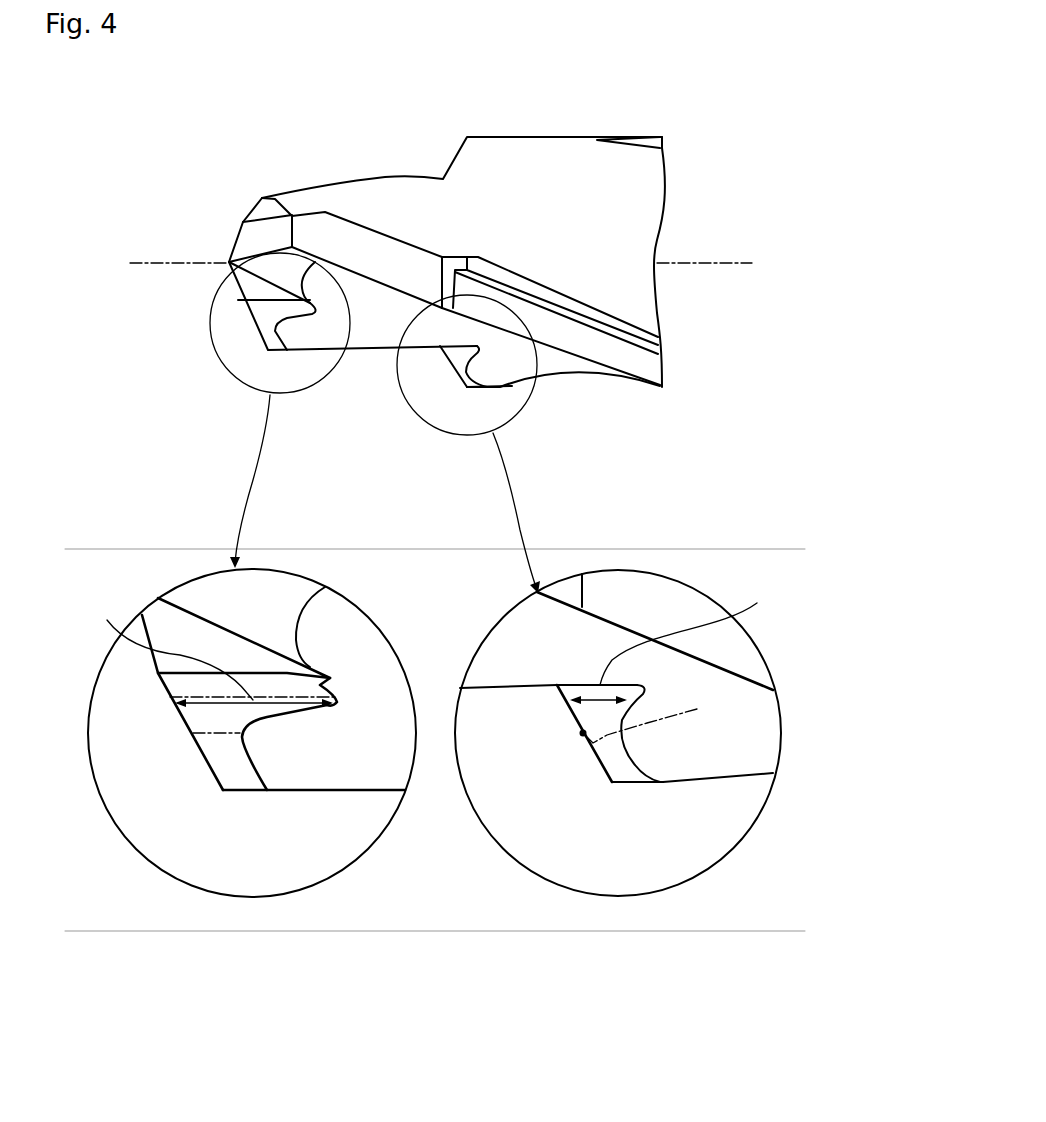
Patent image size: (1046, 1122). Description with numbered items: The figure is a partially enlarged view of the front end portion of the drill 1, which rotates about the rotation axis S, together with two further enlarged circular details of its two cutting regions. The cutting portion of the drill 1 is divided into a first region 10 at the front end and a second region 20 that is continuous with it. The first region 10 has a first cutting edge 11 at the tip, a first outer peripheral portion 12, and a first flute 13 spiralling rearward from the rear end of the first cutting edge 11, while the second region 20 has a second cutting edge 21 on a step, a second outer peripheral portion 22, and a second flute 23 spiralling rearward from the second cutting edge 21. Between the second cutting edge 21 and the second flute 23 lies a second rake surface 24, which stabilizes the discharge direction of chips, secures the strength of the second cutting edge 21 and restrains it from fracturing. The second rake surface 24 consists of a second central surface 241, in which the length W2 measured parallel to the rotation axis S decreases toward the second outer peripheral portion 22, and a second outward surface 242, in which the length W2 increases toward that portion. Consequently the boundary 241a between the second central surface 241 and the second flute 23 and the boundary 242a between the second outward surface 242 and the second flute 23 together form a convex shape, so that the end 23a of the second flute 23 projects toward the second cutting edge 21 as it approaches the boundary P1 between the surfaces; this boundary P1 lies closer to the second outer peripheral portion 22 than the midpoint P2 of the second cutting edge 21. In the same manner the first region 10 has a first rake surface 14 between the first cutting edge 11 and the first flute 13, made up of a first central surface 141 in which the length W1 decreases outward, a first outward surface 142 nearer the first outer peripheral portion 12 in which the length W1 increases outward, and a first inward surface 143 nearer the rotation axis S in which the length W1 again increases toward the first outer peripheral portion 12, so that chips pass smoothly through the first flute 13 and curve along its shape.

The drill 1 is at (680, 154).
The first region 10 is at (445, 118).
The second region 20 is at (665, 118).
The first cutting edge 11 is at (262, 325).
The first outer peripheral portion 12 is at (287, 790).
The first flute 13 is at (292, 332).
The first rake surface 14 is at (275, 330).
The first central surface 141 is at (205, 714).
The first outward surface 142 is at (220, 755).
The first inward surface 143 is at (183, 685).
The second cutting edge 21 is at (452, 365).
The second outer peripheral portion 22 is at (690, 783).
The second flute 23 is at (493, 368).
The second rake surface 24 is at (467, 380).
The second central surface 241 is at (597, 717).
The second outward surface 242 is at (617, 767).
The boundary between second central surface and second flute 241a is at (632, 713).
The boundary between second outward surface and second flute 242a is at (635, 760).
The end of second flute 23a is at (713, 757).
The rotation axis S is at (180, 258).
The length of first rake surface W1 is at (206, 667).
The length of second rake surface W2 is at (677, 644).
The boundary between second central surface and second outward surface P1 is at (654, 719).
The midpoint of second cutting edge P2 is at (583, 733).